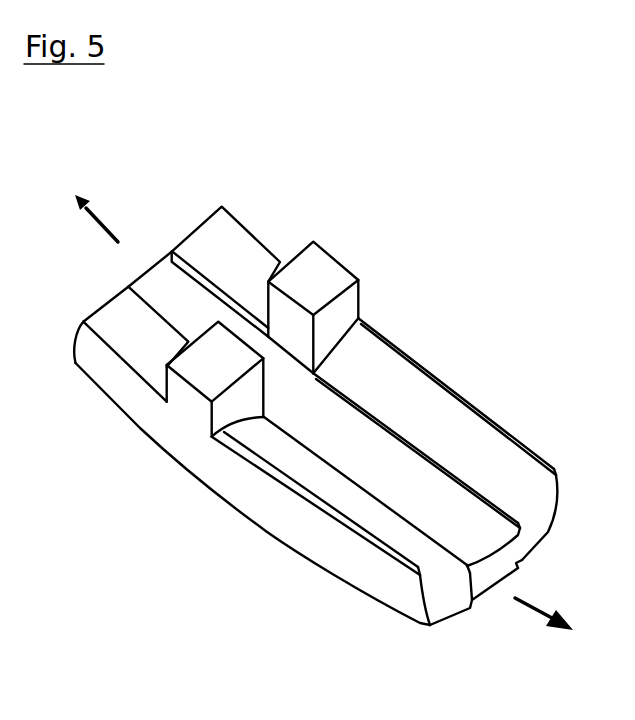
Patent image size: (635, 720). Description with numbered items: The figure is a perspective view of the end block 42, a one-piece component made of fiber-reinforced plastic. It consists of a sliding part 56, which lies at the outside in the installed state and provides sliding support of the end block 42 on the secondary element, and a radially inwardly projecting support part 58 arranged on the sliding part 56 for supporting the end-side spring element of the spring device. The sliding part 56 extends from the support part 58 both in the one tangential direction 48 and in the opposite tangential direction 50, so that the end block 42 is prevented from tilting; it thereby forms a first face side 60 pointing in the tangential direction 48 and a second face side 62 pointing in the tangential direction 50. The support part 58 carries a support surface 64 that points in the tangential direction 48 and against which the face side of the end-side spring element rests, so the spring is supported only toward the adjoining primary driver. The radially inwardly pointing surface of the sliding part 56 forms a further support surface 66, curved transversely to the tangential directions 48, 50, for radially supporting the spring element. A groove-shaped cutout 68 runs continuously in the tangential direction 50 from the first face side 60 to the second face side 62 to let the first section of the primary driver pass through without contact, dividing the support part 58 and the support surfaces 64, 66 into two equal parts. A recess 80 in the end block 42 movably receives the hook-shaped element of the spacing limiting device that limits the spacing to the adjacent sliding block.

The end block 42 is at (464, 179).
The tangential direction 48 is at (530, 600).
The opposite tangential direction 50 is at (108, 224).
The sliding part 56 is at (290, 523).
The support part 58 is at (212, 355).
The first face side 60 is at (537, 522).
The second face side 62 is at (111, 325).
The support surface 64 is at (242, 400).
The support surface 66 is at (368, 510).
The cutout 68 is at (182, 288).
The recess 80 is at (494, 604).